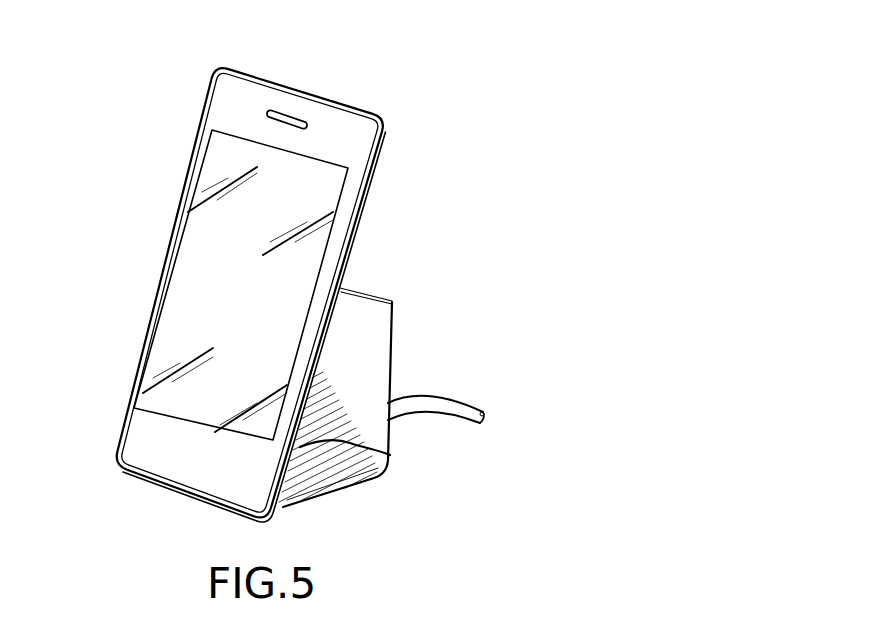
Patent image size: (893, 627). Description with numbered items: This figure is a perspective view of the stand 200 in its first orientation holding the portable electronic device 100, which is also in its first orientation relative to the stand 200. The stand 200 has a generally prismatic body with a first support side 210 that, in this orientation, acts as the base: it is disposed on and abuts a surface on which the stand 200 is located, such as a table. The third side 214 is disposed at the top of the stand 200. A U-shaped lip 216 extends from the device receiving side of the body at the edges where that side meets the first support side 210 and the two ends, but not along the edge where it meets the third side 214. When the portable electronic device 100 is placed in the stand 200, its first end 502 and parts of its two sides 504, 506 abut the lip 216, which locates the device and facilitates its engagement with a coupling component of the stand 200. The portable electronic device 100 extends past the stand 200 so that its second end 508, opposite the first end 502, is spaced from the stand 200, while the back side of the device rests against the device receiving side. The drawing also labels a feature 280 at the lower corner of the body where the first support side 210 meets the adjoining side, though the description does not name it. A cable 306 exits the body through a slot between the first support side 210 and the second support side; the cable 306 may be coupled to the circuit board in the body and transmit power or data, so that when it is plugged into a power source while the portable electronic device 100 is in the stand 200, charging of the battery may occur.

The portable electronic device 100 is at (335, 108).
The second end 508 is at (270, 80).
The side 504 is at (357, 230).
The first end 502 is at (190, 493).
The side 506 is at (167, 262).
The stand 200 is at (393, 322).
The third side 214 is at (350, 292).
The lip 216 is at (390, 453).
The first support side 210 is at (290, 513).
The corner edge of docking station 280 is at (389, 472).
The cable 306 is at (445, 398).